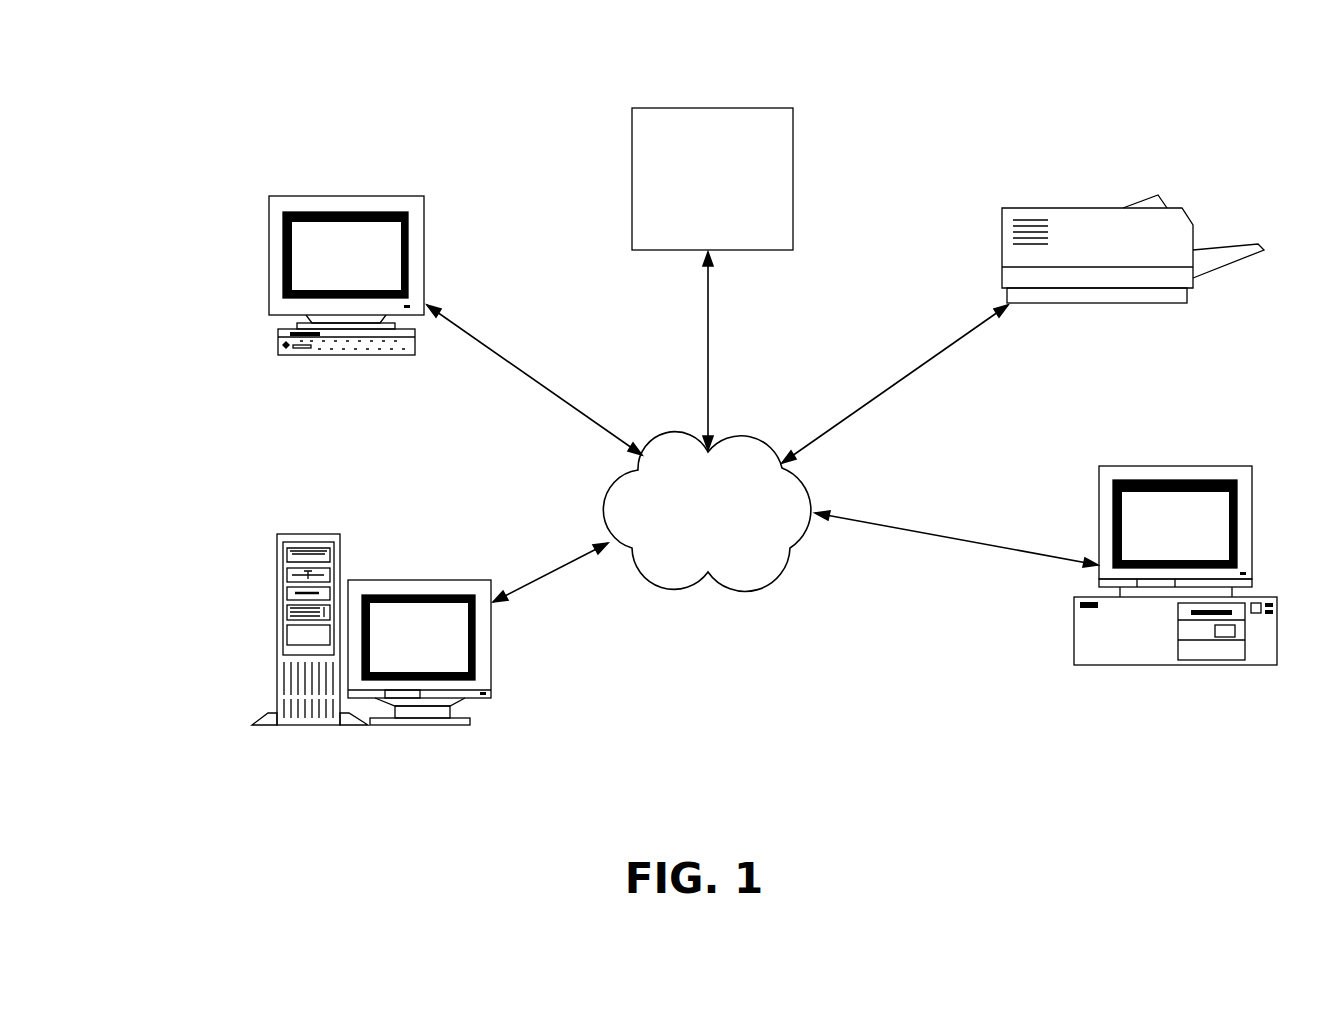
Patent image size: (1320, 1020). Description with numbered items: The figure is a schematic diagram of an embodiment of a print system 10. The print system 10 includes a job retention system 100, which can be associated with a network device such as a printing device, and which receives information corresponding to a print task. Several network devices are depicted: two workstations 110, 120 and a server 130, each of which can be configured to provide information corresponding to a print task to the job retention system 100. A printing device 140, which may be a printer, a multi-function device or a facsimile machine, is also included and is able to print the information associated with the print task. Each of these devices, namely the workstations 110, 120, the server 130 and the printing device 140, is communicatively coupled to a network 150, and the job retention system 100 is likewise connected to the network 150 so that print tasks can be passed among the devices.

The print system 10 is at (186, 104).
The job retention system 100 is at (670, 108).
The workstation 110 is at (268, 274).
The workstation 120 is at (1252, 522).
The server 130 is at (277, 630).
The printing device 140 is at (1002, 226).
The network 150 is at (737, 590).